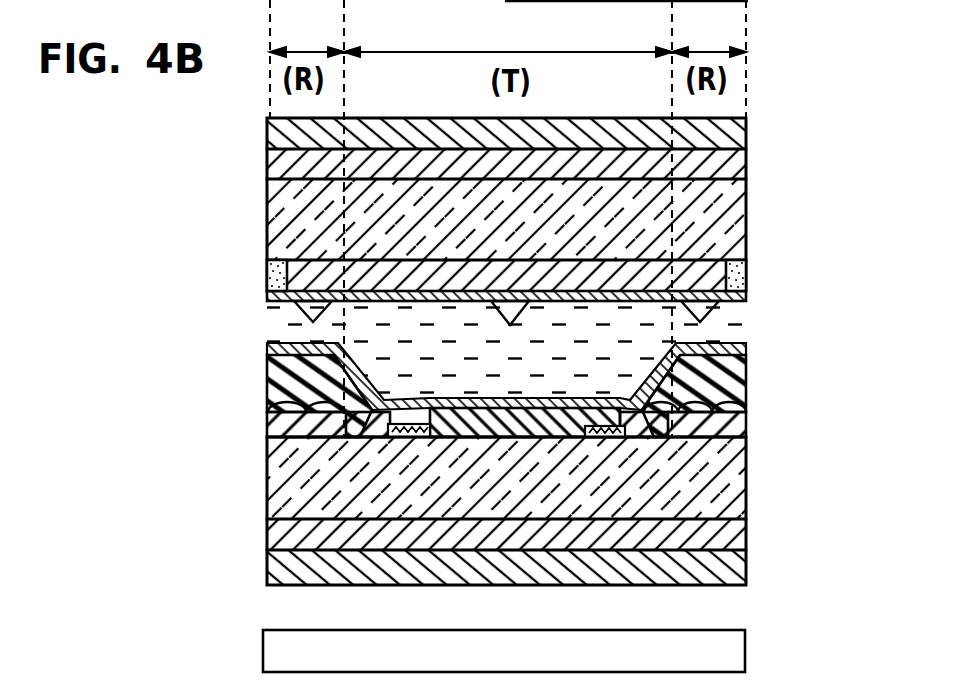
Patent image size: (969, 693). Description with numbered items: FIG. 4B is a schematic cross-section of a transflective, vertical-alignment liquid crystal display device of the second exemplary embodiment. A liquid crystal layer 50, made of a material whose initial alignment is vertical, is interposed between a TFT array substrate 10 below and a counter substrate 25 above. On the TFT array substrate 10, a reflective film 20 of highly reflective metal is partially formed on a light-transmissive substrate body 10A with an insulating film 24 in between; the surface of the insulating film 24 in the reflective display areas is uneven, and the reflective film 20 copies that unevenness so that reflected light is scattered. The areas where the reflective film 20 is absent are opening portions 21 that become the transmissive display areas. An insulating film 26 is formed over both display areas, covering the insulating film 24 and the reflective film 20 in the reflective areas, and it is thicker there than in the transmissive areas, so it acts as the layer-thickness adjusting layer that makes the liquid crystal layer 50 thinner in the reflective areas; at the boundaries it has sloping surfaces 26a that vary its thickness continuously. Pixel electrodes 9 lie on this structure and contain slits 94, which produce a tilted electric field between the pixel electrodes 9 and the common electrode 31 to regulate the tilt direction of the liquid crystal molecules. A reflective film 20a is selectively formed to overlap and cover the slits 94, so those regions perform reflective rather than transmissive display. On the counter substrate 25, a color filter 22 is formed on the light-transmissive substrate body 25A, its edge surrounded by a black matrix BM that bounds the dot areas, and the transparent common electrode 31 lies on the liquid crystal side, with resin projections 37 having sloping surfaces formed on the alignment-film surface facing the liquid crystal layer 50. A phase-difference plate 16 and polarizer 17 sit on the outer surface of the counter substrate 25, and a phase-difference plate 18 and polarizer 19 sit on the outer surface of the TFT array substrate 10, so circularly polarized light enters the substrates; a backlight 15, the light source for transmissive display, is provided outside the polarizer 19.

The counter substrate 25 is at (172, 116).
The polarizer 17 is at (746, 131).
The phase-difference plate 16 is at (746, 170).
The substrate body 25A is at (735, 210).
The color filter 22 is at (746, 277).
The black matrix BM is at (268, 278).
The common electrode 31 is at (746, 295).
The liquid crystal layer 50 is at (746, 340).
The projections 37 is at (746, 327).
The slits 94 is at (398, 340).
The TFT array substrate 10 is at (170, 345).
The sloping surfaces 26a is at (268, 386).
The insulating film 26 is at (746, 390).
The reflective film 20 is at (746, 410).
The reflective film 20a is at (406, 437).
The insulating film 24 is at (746, 433).
The opening portions 21 is at (347, 437).
The pixel electrodes 9 is at (746, 357).
The substrate body 10A is at (735, 490).
The phase-difference plate 18 is at (746, 548).
The polarizer 19 is at (746, 575).
The backlight 15 is at (733, 652).